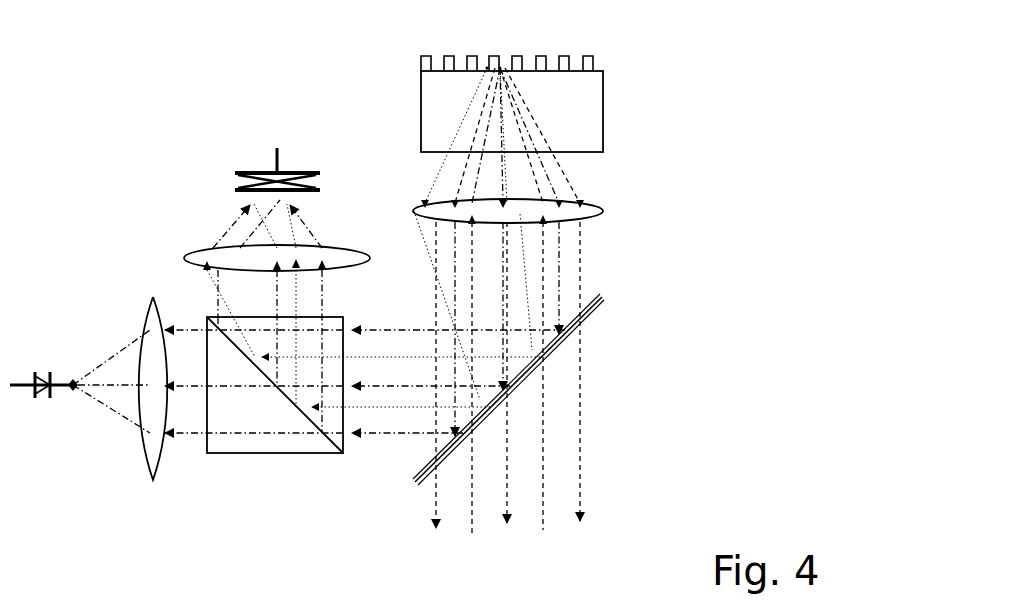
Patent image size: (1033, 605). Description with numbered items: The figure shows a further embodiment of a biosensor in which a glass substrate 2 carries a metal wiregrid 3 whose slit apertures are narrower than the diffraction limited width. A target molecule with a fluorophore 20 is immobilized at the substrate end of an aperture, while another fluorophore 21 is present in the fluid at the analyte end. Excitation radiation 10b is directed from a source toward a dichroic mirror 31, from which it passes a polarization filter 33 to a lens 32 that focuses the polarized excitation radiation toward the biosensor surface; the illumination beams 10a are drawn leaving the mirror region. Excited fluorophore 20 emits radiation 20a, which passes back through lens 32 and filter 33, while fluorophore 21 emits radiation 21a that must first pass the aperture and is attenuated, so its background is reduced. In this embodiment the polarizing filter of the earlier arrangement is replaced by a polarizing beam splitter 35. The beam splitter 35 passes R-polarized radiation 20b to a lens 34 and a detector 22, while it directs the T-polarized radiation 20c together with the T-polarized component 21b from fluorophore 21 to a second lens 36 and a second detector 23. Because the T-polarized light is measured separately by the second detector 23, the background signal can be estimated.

The substrate 2 is at (604, 104).
The wiregrid 3 is at (597, 62).
The fluorophore 20 is at (502, 64).
The fluorophore 21 is at (486, 60).
The radiation 21a is at (483, 56).
The T-polarized component 21b is at (458, 118).
The emitted radiation 20a is at (401, 433).
The R-polarized radiation 20b is at (188, 437).
The T-polarized radiation 20c is at (303, 237).
The illumination light beams 10a is at (596, 480).
The excitation radiation 10b is at (570, 182).
The detector 22 is at (46, 392).
The second detector 23 is at (290, 166).
The dichroic mirror 31 is at (599, 374).
The lens 32 is at (605, 211).
The polarization filter 33 is at (604, 297).
The lens 34 is at (155, 481).
The polarizing beam splitter 35 is at (250, 455).
The second lens 36 is at (234, 258).